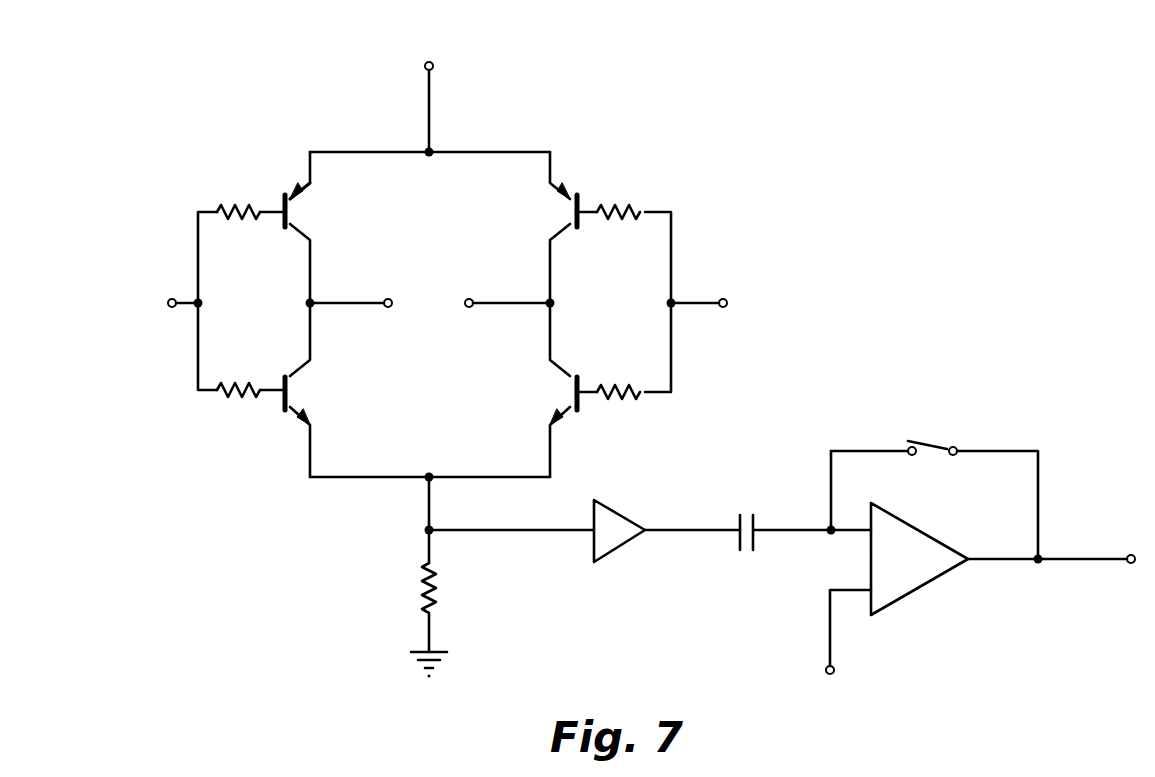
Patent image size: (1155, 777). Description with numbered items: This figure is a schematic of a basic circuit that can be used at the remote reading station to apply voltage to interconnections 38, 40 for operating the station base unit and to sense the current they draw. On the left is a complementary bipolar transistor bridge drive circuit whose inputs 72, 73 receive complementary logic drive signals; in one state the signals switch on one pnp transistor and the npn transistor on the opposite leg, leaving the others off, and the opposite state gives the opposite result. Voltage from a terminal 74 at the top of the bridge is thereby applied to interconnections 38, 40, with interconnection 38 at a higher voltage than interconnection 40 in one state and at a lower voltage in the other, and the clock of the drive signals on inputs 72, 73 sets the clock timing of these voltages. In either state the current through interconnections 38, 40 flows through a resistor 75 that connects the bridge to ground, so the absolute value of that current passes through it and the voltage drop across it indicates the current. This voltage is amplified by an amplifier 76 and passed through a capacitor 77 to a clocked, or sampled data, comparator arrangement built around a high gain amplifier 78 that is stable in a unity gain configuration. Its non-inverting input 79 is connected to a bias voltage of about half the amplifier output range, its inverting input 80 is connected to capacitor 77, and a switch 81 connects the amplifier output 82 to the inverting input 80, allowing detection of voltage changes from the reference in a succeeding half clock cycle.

The input 72 is at (173, 298).
The input 73 is at (723, 298).
The interconnection 38 is at (388, 298).
The interconnection 40 is at (469, 298).
The terminal 74 is at (431, 61).
The resistor 75 is at (434, 578).
The amplifier 76 is at (620, 518).
The capacitor 77 is at (746, 514).
The high gain amplifier 78 is at (921, 530).
The non-inverting input 79 is at (829, 588).
The inverting input 80 is at (832, 536).
The switch 81 is at (954, 447).
The amplifier output 82 is at (1134, 543).